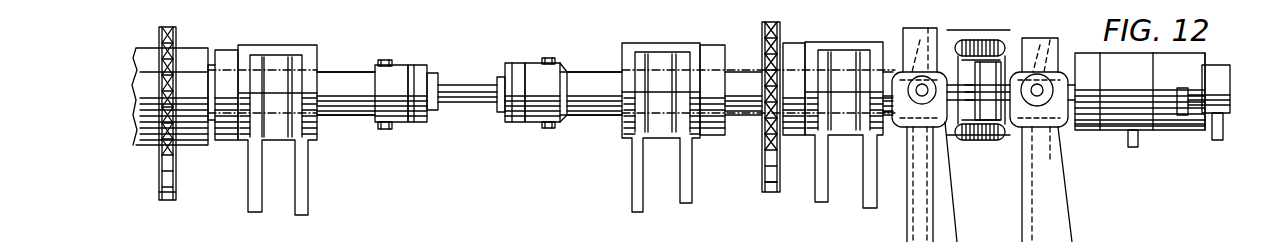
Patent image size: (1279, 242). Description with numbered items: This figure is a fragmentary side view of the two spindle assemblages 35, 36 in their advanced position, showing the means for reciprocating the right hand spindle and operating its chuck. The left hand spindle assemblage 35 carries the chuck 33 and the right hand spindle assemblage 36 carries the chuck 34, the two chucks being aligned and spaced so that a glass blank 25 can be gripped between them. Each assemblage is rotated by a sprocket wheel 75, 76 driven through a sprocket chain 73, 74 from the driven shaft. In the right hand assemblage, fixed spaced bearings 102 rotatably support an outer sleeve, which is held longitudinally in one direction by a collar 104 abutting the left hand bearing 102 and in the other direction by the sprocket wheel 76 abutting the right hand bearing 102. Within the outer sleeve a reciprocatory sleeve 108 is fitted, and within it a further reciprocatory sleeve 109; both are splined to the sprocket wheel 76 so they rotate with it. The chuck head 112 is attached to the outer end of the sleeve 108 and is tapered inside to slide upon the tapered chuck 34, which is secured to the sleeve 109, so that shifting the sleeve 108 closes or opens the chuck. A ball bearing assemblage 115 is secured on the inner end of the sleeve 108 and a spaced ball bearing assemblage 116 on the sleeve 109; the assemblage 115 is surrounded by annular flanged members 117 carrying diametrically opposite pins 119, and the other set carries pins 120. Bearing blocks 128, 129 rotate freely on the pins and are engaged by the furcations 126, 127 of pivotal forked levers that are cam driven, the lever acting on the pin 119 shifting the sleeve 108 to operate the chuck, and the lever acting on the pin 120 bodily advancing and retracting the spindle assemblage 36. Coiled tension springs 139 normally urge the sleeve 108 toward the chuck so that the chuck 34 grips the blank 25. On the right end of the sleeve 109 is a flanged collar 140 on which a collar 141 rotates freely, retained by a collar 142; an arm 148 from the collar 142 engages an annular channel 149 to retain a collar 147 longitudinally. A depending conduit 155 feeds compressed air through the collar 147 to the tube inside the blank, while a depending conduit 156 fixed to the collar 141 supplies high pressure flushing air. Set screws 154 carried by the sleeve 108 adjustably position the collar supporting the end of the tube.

The blank 25 is at (472, 95).
The chuck 33 is at (440, 70).
The chuck 34 is at (506, 67).
The spindle assemblage 35 is at (351, 64).
The spindle assemblage 36 is at (601, 124).
The sprocket chain 73 is at (160, 192).
The sprocket chain 74 is at (762, 191).
The sprocket wheel 75 is at (172, 26).
The sprocket wheel 76 is at (762, 31).
The fixed spaced bearings 102 is at (128, 48).
The collar 104 is at (228, 50).
The sleeve 108 is at (392, 75).
The sleeve 109 is at (975, 95).
The chuck head 112 is at (415, 124).
The ball bearing assemblage 115 is at (992, 40).
The ball bearing assemblage 116 is at (1044, 33).
The annular flanged members 117 is at (917, 26).
The pin 119 is at (918, 82).
The pin 120 is at (1036, 97).
The furcation 126 is at (887, 115).
The furcation 127 is at (1070, 100).
The bearing block 128 is at (950, 26).
The bearing block 129 is at (1048, 45).
The coiled tension springs 139 is at (986, 125).
The flanged collar 140 is at (1086, 131).
The collar 141 is at (1140, 131).
The collar 142 is at (1165, 131).
The collar 147 is at (1214, 66).
The arm 148 is at (1198, 58).
The annular channel 149 is at (1190, 112).
The set screws 154 is at (378, 125).
The depending conduit 155 is at (1224, 132).
The depending conduit 156 is at (1134, 147).